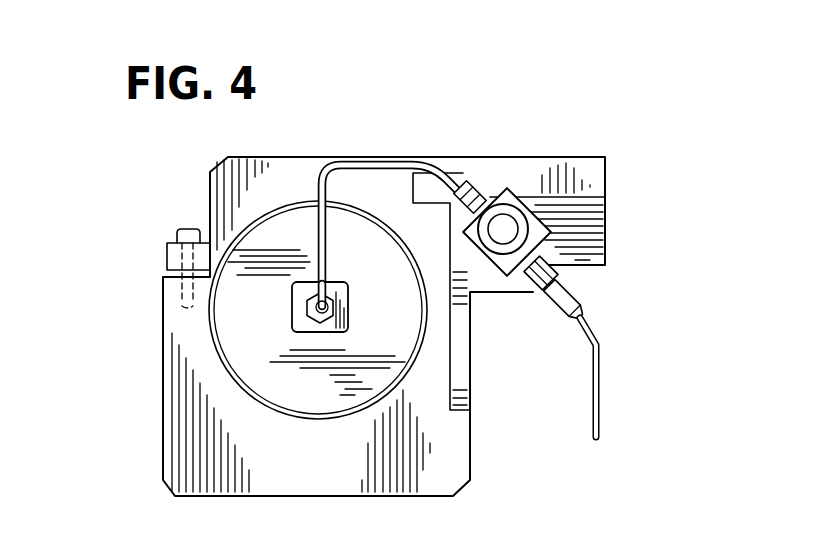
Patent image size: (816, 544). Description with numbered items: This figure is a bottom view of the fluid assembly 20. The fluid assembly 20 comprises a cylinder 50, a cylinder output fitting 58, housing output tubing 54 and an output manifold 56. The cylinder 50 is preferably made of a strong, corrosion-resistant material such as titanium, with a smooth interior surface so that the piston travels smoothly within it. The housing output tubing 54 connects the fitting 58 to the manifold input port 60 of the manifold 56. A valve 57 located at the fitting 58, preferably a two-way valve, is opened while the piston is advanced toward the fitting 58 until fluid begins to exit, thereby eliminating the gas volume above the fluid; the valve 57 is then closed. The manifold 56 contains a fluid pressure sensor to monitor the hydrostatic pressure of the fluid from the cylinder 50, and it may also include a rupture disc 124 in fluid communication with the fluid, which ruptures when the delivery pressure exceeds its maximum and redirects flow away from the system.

The fluid assembly 20 is at (160, 258).
The cylinder 50 is at (250, 335).
The housing output tubing 54 is at (320, 240).
The output manifold 56 is at (557, 160).
The valve 57 is at (313, 335).
The cylinder output fitting 58 is at (303, 307).
The manifold input port 60 is at (478, 185).
The rupture disc 124 is at (512, 230).